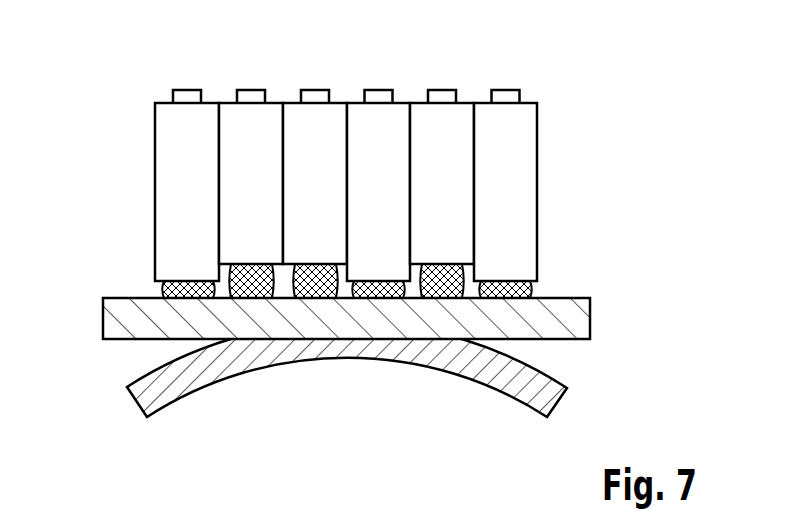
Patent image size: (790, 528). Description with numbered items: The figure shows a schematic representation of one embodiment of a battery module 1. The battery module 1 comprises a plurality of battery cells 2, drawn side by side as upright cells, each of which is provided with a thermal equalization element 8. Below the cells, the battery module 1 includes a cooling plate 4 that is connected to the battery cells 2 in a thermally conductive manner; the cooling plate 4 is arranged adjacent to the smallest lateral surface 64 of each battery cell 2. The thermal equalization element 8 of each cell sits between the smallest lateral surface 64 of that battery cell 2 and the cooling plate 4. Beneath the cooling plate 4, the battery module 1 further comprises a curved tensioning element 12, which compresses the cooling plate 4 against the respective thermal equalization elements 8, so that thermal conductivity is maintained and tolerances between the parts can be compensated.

The battery module 1 is at (346, 215).
The battery cell 2 is at (525, 127).
The cooling plate 4 is at (573, 322).
The thermal equalization element 8 is at (488, 297).
The tensioning element 12 is at (517, 380).
The smallest lateral surface 64 is at (440, 264).